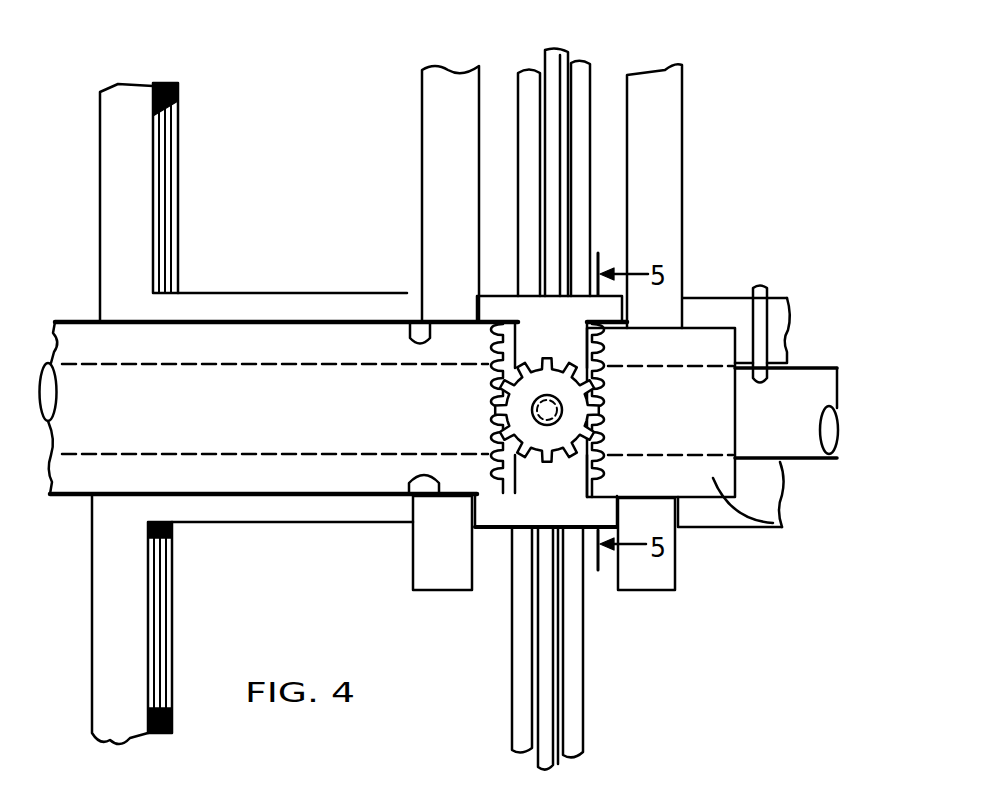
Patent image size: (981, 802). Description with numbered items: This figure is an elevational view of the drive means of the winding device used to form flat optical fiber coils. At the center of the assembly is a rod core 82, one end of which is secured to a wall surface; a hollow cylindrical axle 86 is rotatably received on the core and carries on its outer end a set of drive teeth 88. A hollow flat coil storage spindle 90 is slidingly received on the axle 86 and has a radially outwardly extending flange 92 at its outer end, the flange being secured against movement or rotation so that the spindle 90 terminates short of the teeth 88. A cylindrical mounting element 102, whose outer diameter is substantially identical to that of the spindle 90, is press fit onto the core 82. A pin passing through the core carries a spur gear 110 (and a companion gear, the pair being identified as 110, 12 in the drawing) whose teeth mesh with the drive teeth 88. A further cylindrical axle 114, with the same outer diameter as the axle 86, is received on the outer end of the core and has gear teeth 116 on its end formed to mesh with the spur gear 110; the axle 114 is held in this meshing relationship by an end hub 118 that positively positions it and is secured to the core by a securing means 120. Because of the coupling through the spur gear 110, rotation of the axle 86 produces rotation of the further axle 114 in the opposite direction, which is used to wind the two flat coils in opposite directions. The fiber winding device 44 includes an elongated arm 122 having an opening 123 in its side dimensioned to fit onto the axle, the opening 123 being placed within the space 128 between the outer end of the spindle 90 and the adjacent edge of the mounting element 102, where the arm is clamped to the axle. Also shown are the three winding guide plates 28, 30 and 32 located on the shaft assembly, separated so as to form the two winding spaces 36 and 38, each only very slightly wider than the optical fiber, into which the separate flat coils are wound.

The drive assembly 12 is at (513, 508).
The winding guide plate 28 is at (575, 707).
The winding guide plate 30 is at (556, 62).
The winding guide plate 32 is at (521, 688).
The winding space 36 is at (573, 56).
The winding space 38 is at (544, 58).
The second fiber winding device 44 is at (412, 162).
The rod core 82 is at (47, 424).
The hollow cylindrical axle 86 is at (67, 338).
The drive teeth 88 is at (521, 455).
The flat coil storage spindle 90 is at (239, 306).
The flange 92 is at (125, 115).
The cylindrical mounting element 102 is at (516, 308).
The spur gear 110 is at (534, 438).
The further cylindrical axle 114 is at (783, 527).
The gear teeth 116 is at (611, 458).
The end hub 118 is at (788, 331).
The securing means 120 is at (768, 293).
The elongated arm 122 is at (434, 173).
The opening 123 is at (411, 322).
The space 128 is at (672, 306).